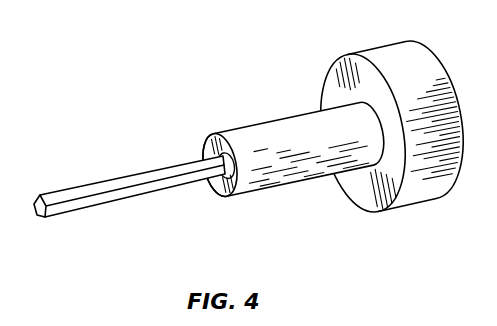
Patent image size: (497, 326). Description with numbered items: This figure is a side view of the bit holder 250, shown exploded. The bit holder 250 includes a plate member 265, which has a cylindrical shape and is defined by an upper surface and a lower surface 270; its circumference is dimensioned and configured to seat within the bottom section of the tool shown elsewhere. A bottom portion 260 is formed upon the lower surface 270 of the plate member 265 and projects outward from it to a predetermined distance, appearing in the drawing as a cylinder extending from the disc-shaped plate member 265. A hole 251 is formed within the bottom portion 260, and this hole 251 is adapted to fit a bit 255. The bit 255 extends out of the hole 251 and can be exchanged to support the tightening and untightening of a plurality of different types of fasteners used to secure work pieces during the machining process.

The bit holder 250 is at (206, 123).
The hole 251 is at (278, 208).
The bit 255 is at (90, 183).
The bottom portion 260 is at (300, 121).
The plate member 265 is at (388, 40).
The lower surface 270 is at (341, 77).